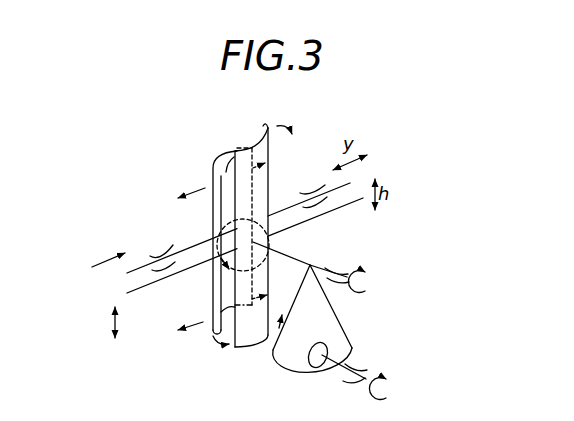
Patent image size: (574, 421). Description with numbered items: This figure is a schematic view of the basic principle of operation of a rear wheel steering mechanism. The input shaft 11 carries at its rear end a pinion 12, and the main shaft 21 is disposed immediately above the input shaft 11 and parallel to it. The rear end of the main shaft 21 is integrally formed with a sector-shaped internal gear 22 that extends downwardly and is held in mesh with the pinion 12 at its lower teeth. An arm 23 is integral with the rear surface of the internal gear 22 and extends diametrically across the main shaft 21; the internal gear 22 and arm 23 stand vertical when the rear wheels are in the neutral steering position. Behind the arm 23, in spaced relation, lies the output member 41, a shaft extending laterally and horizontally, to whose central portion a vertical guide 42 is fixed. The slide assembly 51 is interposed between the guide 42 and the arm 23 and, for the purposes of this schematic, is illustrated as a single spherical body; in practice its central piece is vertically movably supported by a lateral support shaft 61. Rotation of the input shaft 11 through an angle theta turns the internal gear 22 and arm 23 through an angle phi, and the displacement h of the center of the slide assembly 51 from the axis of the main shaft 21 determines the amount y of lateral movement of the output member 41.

The input shaft 11 is at (365, 386).
The pinion 12 is at (330, 336).
The main shaft 21 is at (352, 280).
The internal gear 22 is at (288, 364).
The arm 23 is at (270, 182).
The output member 41 is at (142, 266).
The guide 42 is at (213, 221).
The slide assembly 51 is at (228, 253).
The lateral support shaft 61 is at (305, 221).